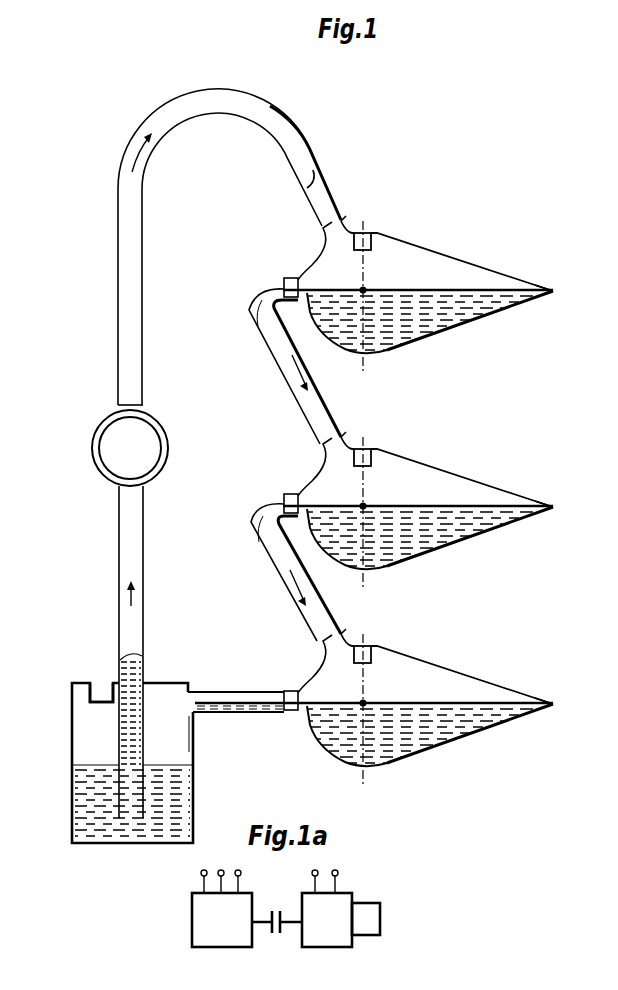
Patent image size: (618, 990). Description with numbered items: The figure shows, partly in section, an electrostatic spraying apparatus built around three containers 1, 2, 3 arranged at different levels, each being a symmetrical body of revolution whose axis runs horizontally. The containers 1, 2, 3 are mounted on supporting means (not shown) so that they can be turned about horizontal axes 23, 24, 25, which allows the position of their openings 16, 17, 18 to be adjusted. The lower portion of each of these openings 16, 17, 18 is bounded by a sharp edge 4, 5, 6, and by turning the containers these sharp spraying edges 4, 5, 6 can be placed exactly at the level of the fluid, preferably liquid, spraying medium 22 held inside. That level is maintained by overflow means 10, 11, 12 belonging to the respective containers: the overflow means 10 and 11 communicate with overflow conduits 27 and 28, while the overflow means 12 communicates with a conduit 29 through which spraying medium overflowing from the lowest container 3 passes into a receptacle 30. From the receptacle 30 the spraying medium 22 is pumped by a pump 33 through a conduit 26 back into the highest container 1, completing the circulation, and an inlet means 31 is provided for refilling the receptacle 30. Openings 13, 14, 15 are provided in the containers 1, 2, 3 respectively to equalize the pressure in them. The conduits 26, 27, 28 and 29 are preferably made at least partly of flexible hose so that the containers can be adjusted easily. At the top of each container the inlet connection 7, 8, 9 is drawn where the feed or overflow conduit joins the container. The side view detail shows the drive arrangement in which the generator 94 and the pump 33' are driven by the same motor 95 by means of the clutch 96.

In FIG. 1, the container 1 is at (405, 252).
In FIG. 1, the container 2 is at (425, 497).
In FIG. 1, the container 3 is at (425, 694).
In FIG. 1, the sharp edge 4 is at (555, 293).
In FIG. 1, the sharp edge 5 is at (485, 536).
In FIG. 1, the sharp edge 6 is at (485, 733).
In FIG. 1, the inlet joint of first vessel 7 is at (333, 214).
In FIG. 1, the inlet joint of second vessel 8 is at (351, 423).
In FIG. 1, the inlet joint of third vessel 9 is at (349, 620).
In FIG. 1, the overflow means 10 is at (291, 278).
In FIG. 1, the overflow means 11 is at (286, 490).
In FIG. 1, the overflow means 12 is at (286, 683).
In FIG. 1, the opening 13 is at (365, 233).
In FIG. 1, the opening 14 is at (383, 436).
In FIG. 1, the opening 15 is at (376, 633).
In FIG. 1, the opening 16 is at (553, 290).
In FIG. 1, the opening 17 is at (559, 499).
In FIG. 1, the opening 18 is at (559, 694).
In FIG. 1, the spraying medium 22 is at (430, 320).
In FIG. 1, the horizontal axis 23 is at (365, 293).
In FIG. 1, the horizontal axis 24 is at (381, 549).
In FIG. 1, the horizontal axis 25 is at (382, 748).
In FIG. 1, the conduit 26 is at (274, 121).
In FIG. 1, the overflow conduit 27 is at (270, 354).
In FIG. 1, the overflow conduit 28 is at (270, 571).
In FIG. 1, the conduit 29 is at (214, 714).
In FIG. 1, the receptacle 30 is at (72, 735).
In FIG. 1, the inlet means 31 is at (100, 690).
In FIG. 1, the pump 33 is at (151, 450).
In FIG. 1A, the pump 33' is at (391, 919).
In FIG. 1A, the generator 94 is at (325, 948).
In FIG. 1A, the motor 95 is at (222, 948).
In FIG. 1A, the clutch 96 is at (278, 907).